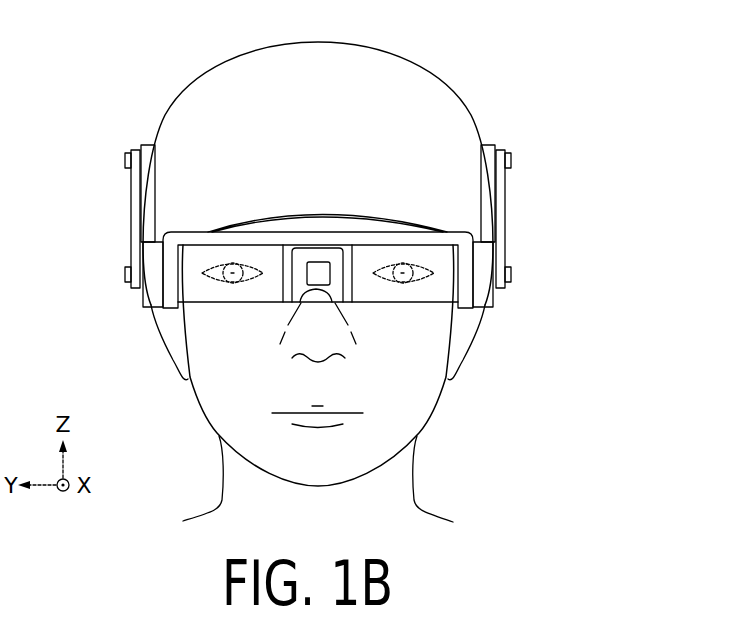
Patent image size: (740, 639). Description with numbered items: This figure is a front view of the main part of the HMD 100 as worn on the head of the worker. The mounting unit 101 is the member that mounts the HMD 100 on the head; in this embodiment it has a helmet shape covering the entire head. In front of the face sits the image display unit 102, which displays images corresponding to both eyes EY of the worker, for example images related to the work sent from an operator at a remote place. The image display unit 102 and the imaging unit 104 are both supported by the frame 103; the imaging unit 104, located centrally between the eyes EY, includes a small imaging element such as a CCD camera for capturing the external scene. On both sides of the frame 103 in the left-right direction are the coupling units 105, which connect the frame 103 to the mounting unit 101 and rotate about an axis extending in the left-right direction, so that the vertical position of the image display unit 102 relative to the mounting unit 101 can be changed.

The HMD 100 is at (456, 70).
The mounting unit 101 is at (452, 112).
The image display unit 102 is at (202, 256).
The frame 103 is at (150, 296).
The imaging unit 104 is at (315, 262).
The coupling unit 105 is at (130, 219).
The eyes EY is at (218, 263).